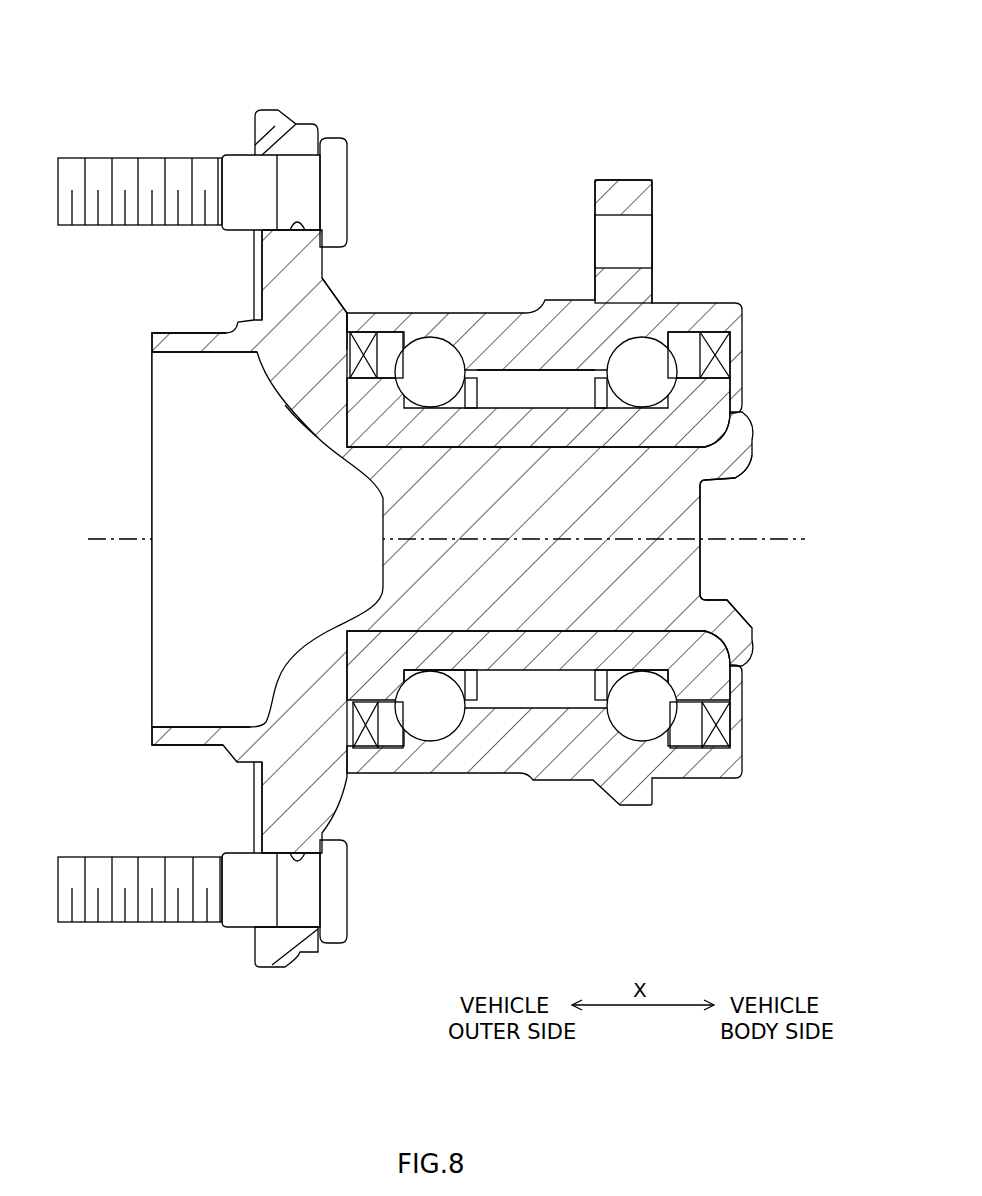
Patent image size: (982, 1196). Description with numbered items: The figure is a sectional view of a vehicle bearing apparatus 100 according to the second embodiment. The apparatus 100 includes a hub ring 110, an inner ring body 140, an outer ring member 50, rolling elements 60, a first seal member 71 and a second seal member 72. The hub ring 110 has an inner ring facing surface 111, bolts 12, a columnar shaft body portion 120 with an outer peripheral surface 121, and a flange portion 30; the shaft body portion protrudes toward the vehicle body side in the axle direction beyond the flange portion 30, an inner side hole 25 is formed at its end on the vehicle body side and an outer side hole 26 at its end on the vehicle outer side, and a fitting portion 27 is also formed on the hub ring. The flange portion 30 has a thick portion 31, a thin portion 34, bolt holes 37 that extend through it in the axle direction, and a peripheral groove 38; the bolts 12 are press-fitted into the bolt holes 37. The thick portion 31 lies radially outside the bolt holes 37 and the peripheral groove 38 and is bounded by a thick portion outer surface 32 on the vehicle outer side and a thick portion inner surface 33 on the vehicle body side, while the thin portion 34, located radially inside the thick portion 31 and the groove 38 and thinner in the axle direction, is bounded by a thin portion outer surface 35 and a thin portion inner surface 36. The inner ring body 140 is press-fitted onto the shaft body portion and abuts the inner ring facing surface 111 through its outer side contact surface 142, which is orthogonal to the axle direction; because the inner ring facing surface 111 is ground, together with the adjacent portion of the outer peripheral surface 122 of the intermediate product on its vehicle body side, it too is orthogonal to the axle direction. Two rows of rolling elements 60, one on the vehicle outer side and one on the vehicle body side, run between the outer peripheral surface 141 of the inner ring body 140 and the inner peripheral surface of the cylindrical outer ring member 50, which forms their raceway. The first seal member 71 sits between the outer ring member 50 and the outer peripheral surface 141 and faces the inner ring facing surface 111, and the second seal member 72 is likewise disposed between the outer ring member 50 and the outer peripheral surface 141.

The vehicle bearing apparatus 100 is at (727, 50).
The bolts 12 is at (349, 184).
The inner side hole 25 is at (753, 592).
The outer side hole 26 is at (152, 730).
The fitting portion 27 is at (165, 332).
The flange portion 30 is at (265, 110).
The thick portion 31 is at (255, 132).
The thick portion outer surface 32 is at (255, 150).
The thick portion inner surface 33 is at (318, 130).
The thin portion 34 is at (254, 294).
The thin portion outer surface 35 is at (254, 250).
The thin portion inner surface 36 is at (337, 248).
The bolt holes 37 is at (302, 236).
The peripheral groove 38 is at (254, 845).
The outer ring member 50 is at (628, 180).
The rolling elements 60 is at (440, 338).
The first seal member 71 is at (364, 756).
The second seal member 72 is at (743, 722).
The hub ring 110 is at (754, 636).
The inner ring facing surface 111 is at (351, 312).
The shaft body portion 120 is at (753, 438).
The outer peripheral surface 121 is at (610, 687).
The outer peripheral surface 122 is at (466, 687).
The inner ring body 140 is at (744, 390).
The outer peripheral surface 141 is at (496, 392).
The outer side contact surface 142 is at (298, 424).